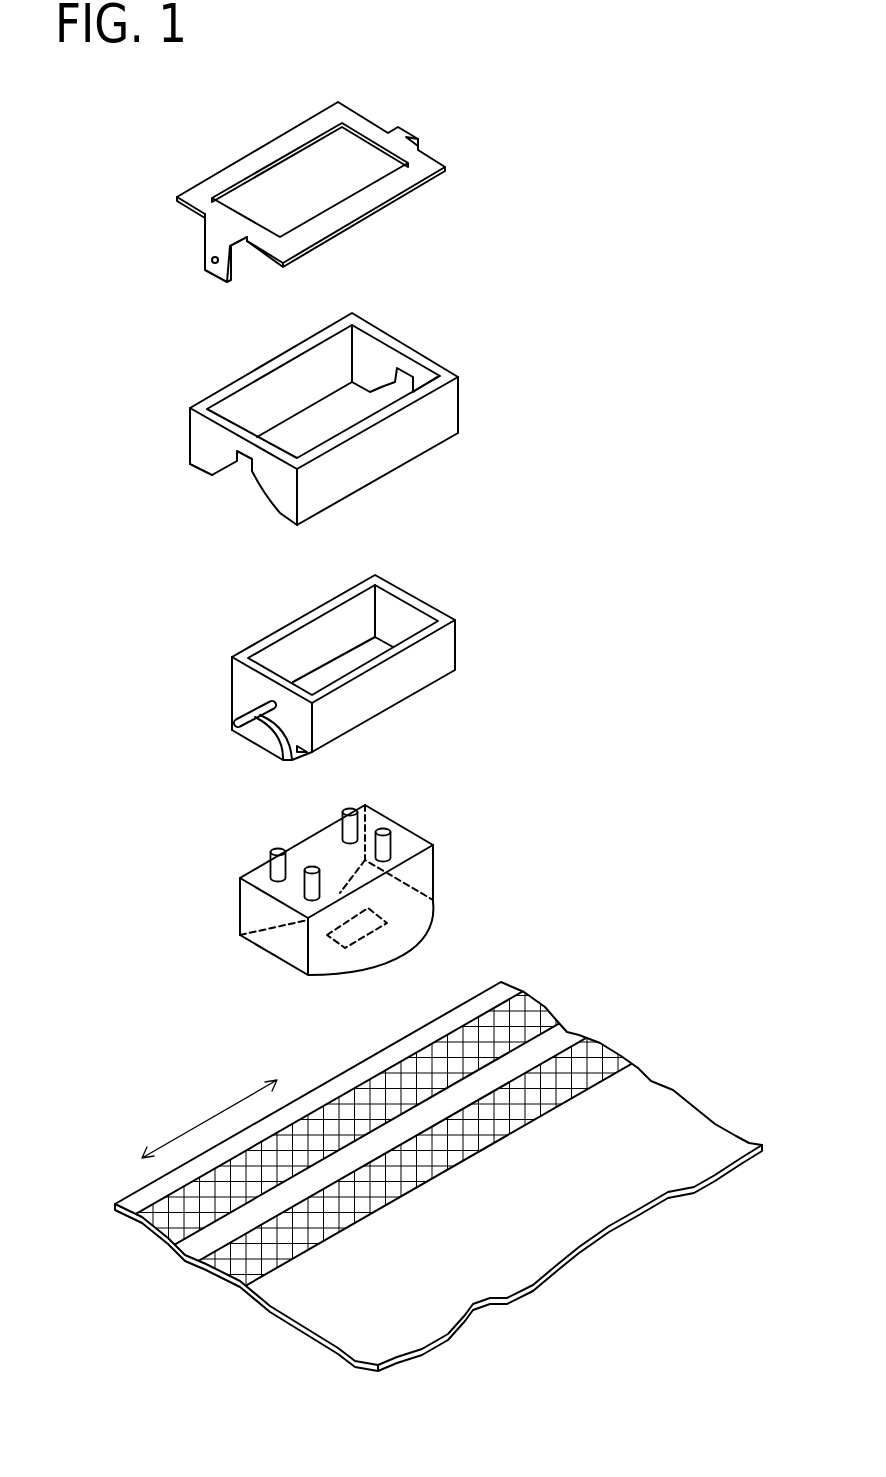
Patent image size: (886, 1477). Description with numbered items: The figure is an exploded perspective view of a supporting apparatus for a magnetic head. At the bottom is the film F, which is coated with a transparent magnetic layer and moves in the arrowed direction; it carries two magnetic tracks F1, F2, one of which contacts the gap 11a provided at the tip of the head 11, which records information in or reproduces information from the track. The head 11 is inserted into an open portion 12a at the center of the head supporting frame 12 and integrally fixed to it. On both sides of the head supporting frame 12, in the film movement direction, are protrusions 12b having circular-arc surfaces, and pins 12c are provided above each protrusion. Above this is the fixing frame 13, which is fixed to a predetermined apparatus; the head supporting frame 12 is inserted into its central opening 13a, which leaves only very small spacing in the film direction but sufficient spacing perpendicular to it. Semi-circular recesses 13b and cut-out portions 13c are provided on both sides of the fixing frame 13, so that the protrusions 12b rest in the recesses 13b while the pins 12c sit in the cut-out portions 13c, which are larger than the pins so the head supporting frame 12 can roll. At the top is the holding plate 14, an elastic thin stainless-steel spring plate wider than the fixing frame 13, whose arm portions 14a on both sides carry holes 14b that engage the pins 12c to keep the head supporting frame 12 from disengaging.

The holding plate 14 is at (397, 203).
The arm portions 14a is at (205, 232).
The holes 14b is at (212, 260).
The fixing frame 13 is at (457, 405).
The opening 13a is at (287, 423).
The semi-circular recesses 13b is at (260, 490).
The cut-out portions 13c is at (242, 465).
The head supporting frame 12 is at (455, 645).
The open portion 12a is at (378, 637).
The protrusions 12b is at (283, 740).
The pins 12c is at (250, 708).
The head 11 is at (435, 862).
The gap 11a is at (360, 940).
The film F is at (461, 1002).
The magnetic track F1 is at (545, 1007).
The magnetic track F2 is at (600, 1039).